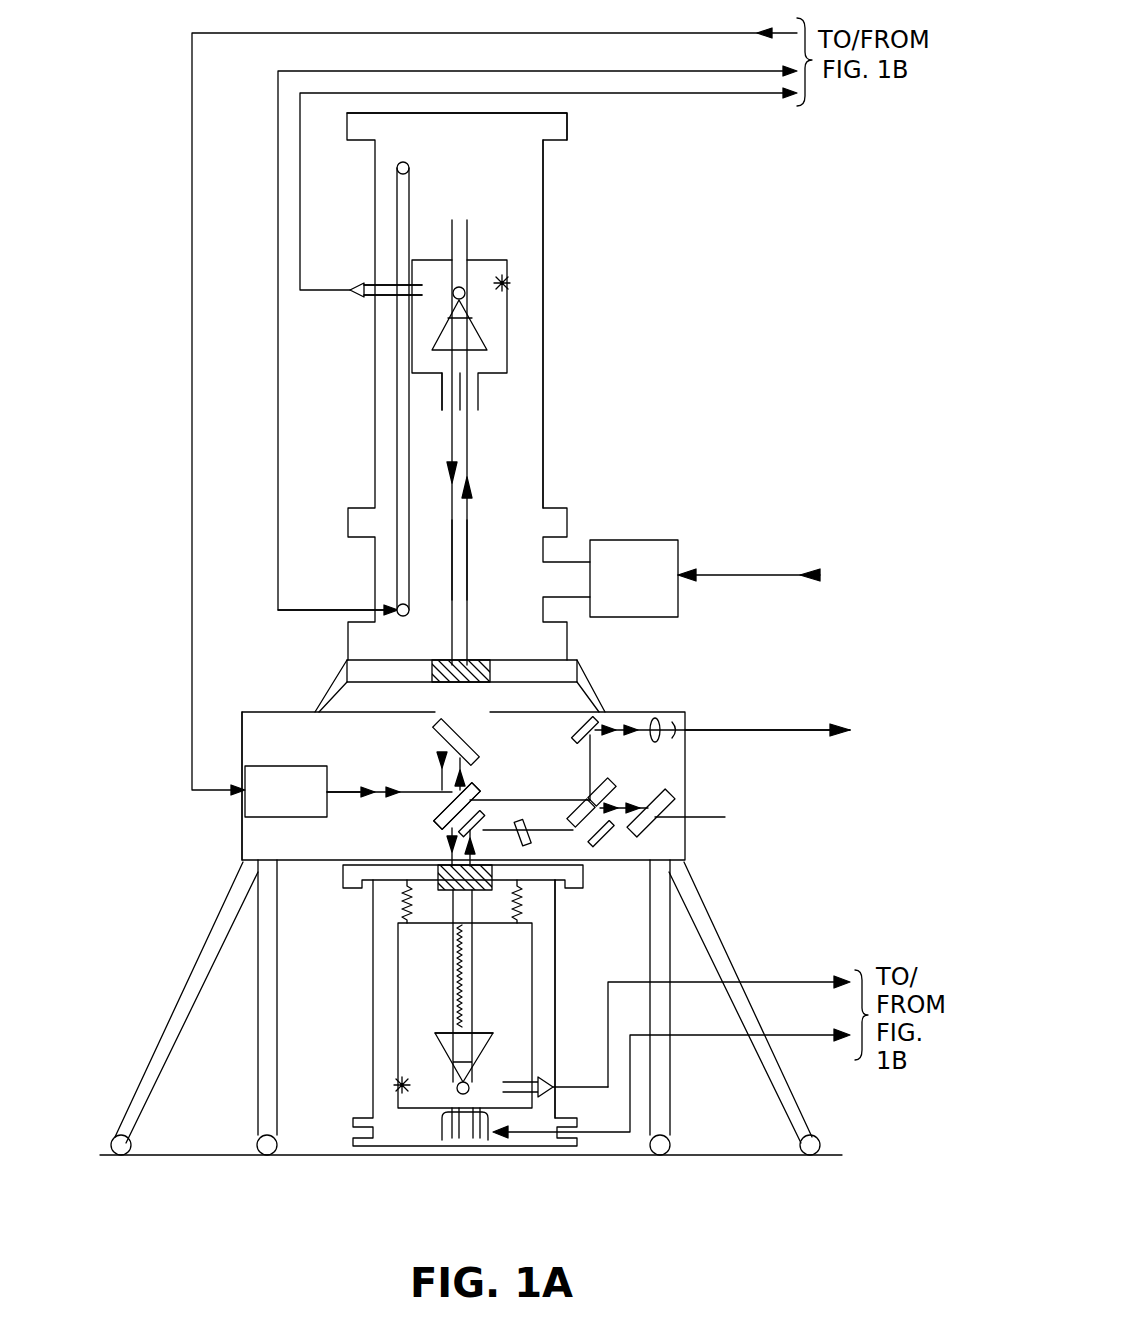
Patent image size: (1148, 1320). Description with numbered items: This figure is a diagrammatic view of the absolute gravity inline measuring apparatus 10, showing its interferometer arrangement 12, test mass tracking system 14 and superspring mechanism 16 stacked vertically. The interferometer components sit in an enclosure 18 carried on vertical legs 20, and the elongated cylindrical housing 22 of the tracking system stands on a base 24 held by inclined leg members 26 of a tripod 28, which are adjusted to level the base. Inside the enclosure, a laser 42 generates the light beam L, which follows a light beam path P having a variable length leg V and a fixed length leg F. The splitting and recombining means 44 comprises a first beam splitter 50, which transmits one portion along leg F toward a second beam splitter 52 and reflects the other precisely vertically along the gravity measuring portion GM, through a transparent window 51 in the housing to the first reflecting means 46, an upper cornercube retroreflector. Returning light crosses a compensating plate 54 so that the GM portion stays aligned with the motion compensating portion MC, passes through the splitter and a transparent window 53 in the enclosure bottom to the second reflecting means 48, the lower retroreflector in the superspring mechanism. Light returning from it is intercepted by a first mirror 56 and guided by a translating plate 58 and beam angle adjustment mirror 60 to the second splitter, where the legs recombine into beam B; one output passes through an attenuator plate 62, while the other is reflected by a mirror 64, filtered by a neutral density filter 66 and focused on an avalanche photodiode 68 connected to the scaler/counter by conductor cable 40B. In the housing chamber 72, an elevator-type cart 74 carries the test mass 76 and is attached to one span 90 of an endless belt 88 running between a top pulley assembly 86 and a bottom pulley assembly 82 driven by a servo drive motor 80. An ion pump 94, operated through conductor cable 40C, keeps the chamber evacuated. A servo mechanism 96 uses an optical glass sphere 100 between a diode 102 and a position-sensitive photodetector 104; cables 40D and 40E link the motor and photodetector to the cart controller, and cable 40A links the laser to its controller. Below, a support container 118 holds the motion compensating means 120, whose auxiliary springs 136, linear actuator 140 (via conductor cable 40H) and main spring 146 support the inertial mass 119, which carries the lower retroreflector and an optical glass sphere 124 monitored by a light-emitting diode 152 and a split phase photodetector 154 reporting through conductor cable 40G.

The absolute gravity inline measuring apparatus 10 is at (700, 322).
The interferometer arrangement 12 is at (705, 785).
The test mass tracking system 14 is at (556, 428).
The superspring mechanism 16 is at (345, 1025).
The enclosure 18 is at (242, 838).
The vertical legs 20 is at (257, 1068).
The housing 22 is at (544, 222).
The base 24 is at (575, 660).
The inclined leg members 26 is at (200, 990).
The tripod 28 is at (600, 688).
The conductor cable 40A is at (636, 33).
The conductor cable 40B is at (790, 730).
The conductor cable 40C is at (750, 578).
The conductor cable 40D is at (653, 73).
The conductor cable 40E is at (706, 94).
The conductor cable 40G is at (770, 982).
The conductor cable 40H is at (795, 1037).
The light beam generating means 42 is at (280, 766).
The light beam splitting and recombining means 44 is at (428, 832).
The first reflecting means 46 is at (482, 330).
The second reflecting means 48 is at (450, 1040).
The first beam splitter 50 is at (436, 812).
The transparent window 51 is at (478, 661).
The second beam splitter 52 is at (604, 784).
The transparent window 53 is at (437, 890).
The compensating plate 54 is at (472, 748).
The first mirror 56 is at (482, 822).
The translating plate 58 is at (522, 845).
The beam angle adjustment mirror 60 is at (598, 838).
The attenuator plate 62 is at (655, 826).
The mirror 64 is at (580, 742).
The neutral density filter 66 is at (660, 718).
The avalanche photodiode 68 is at (678, 740).
The chamber 72 is at (506, 183).
The cart 74 is at (500, 258).
The test mass 76 is at (482, 311).
The servo drive motor 80 is at (398, 618).
The bottom pulley assembly 82 is at (410, 616).
The top pulley assembly 86 is at (408, 165).
The endless belt 88 is at (397, 478).
The span 90 is at (412, 390).
The ion pump 94 is at (650, 540).
The servo mechanism 96 is at (355, 312).
The optical glass sphere 100 is at (460, 288).
The diode 102 is at (508, 283).
The position-sensitive photodetector 104 is at (386, 286).
The support container 118 is at (557, 944).
The inertial mass 119 is at (505, 1030).
The motion compensating means 120 is at (560, 914).
The optical glass sphere 124 is at (472, 1083).
The auxiliary springs 136 is at (405, 905).
The linear actuator 140 is at (425, 1132).
The main spring 146 is at (458, 968).
The light-emitting diode 152 is at (400, 1087).
The split phase photodetector 154 is at (545, 1090).
The recombined light beam B is at (590, 753).
The fixed length leg F is at (512, 788).
The gravity measuring portion GM is at (467, 568).
The light beam L is at (414, 790).
The external motion compensating portion MC is at (472, 1010).
The light beam path P is at (346, 796).
The variable length leg V is at (485, 512).